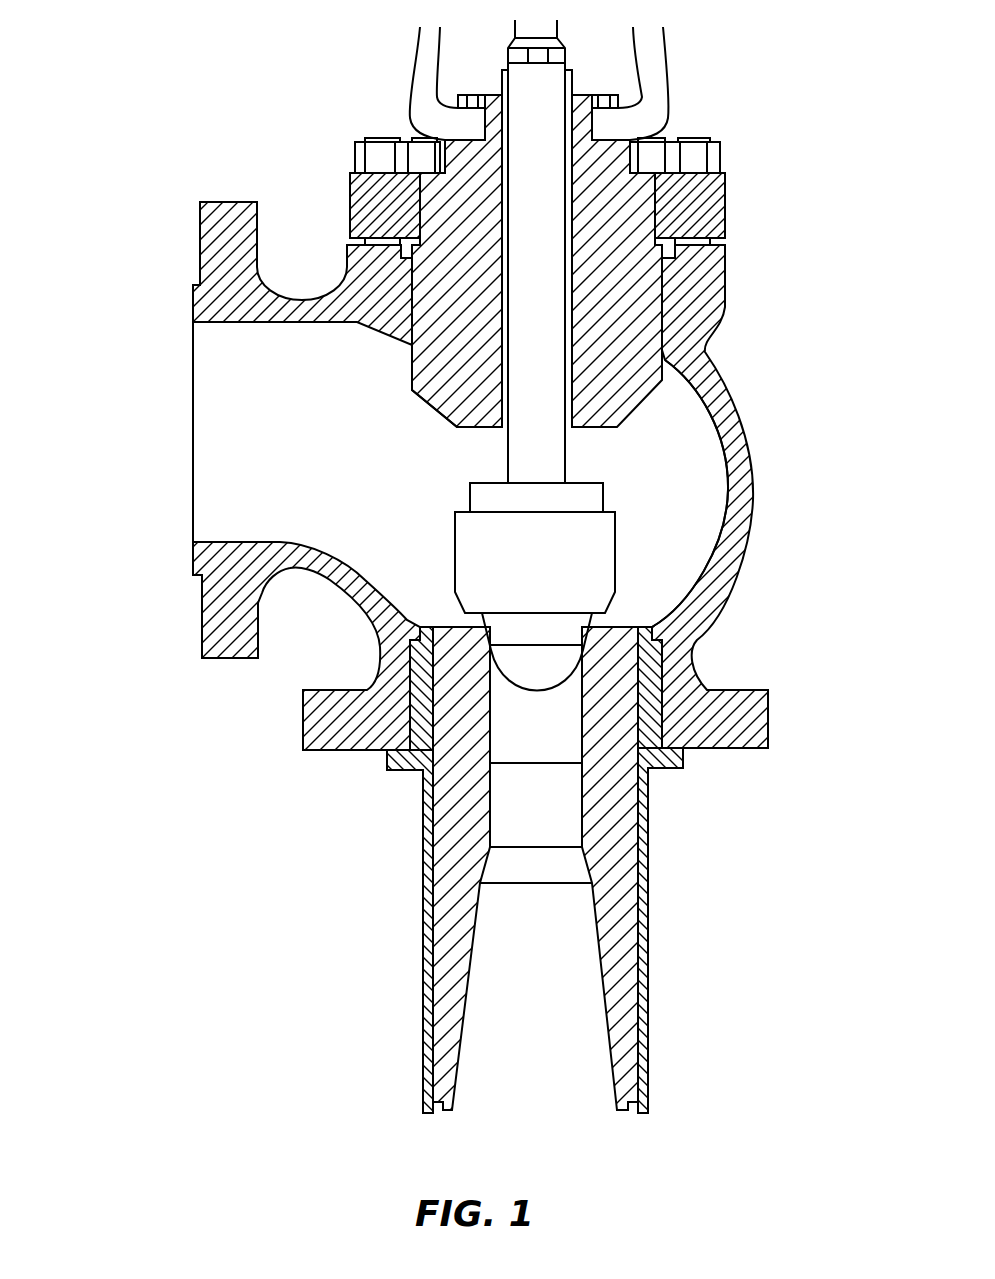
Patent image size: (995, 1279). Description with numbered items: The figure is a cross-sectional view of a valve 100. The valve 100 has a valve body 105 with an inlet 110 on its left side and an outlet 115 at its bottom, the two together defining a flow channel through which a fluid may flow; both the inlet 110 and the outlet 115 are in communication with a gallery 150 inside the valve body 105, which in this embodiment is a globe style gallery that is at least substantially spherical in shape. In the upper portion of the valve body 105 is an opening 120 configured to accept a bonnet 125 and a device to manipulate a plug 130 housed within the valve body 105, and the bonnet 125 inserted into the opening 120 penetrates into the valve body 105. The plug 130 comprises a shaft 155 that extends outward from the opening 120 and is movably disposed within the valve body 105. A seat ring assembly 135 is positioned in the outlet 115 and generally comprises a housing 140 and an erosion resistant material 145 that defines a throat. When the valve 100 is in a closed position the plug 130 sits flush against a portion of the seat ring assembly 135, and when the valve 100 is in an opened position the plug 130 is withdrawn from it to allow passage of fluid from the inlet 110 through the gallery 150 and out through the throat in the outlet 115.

The valve 100 is at (192, 100).
The valve body 105 is at (728, 403).
The inlet 110 is at (268, 432).
The outlet 115 is at (613, 615).
The opening 120 is at (657, 296).
The bonnet 125 is at (412, 362).
The plug 130 is at (615, 553).
The seat ring assembly 135 is at (403, 792).
The housing 140 is at (423, 968).
The erosion resistant material 145 is at (625, 908).
The gallery 150 is at (678, 462).
The shaft 155 is at (508, 445).